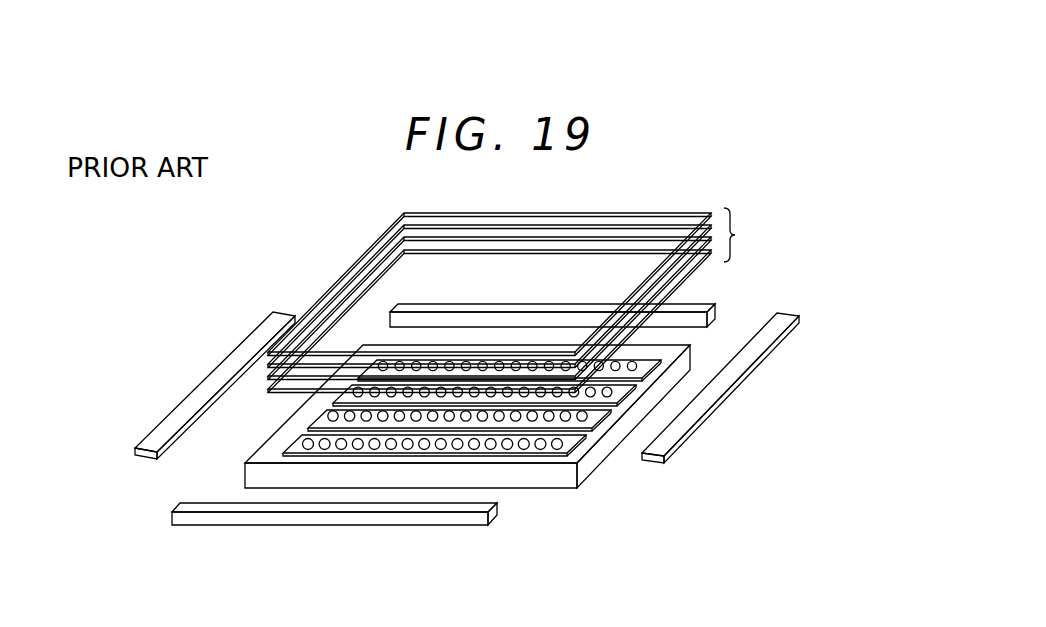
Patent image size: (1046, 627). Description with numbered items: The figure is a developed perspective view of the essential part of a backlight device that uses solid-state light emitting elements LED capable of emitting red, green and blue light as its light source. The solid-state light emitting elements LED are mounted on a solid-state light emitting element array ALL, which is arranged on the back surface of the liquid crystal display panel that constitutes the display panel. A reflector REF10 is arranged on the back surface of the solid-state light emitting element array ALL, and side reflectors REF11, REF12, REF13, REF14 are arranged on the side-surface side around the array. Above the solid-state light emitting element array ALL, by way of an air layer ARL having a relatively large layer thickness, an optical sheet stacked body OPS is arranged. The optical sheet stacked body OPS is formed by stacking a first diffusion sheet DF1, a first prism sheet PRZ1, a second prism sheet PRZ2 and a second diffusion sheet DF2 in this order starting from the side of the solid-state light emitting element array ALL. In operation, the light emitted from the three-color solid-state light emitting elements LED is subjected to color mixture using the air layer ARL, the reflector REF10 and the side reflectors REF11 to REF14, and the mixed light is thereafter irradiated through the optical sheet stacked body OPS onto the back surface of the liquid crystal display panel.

The reflector REF10 is at (590, 465).
The side reflector REF11 is at (227, 365).
The side reflector REF12 is at (632, 311).
The side reflector REF13 is at (728, 383).
The side reflector REF14 is at (343, 520).
The solid-state light emitting element LED is at (507, 450).
The solid-state light emitting element array ALL is at (472, 468).
The air layer ARL is at (726, 263).
The optical sheet stacked body OPS is at (560, 285).
The first diffusion sheet DF1 is at (520, 319).
The second diffusion sheet DF2 is at (520, 268).
The first prism sheet PRZ1 is at (525, 302).
The second prism sheet PRZ2 is at (525, 285).